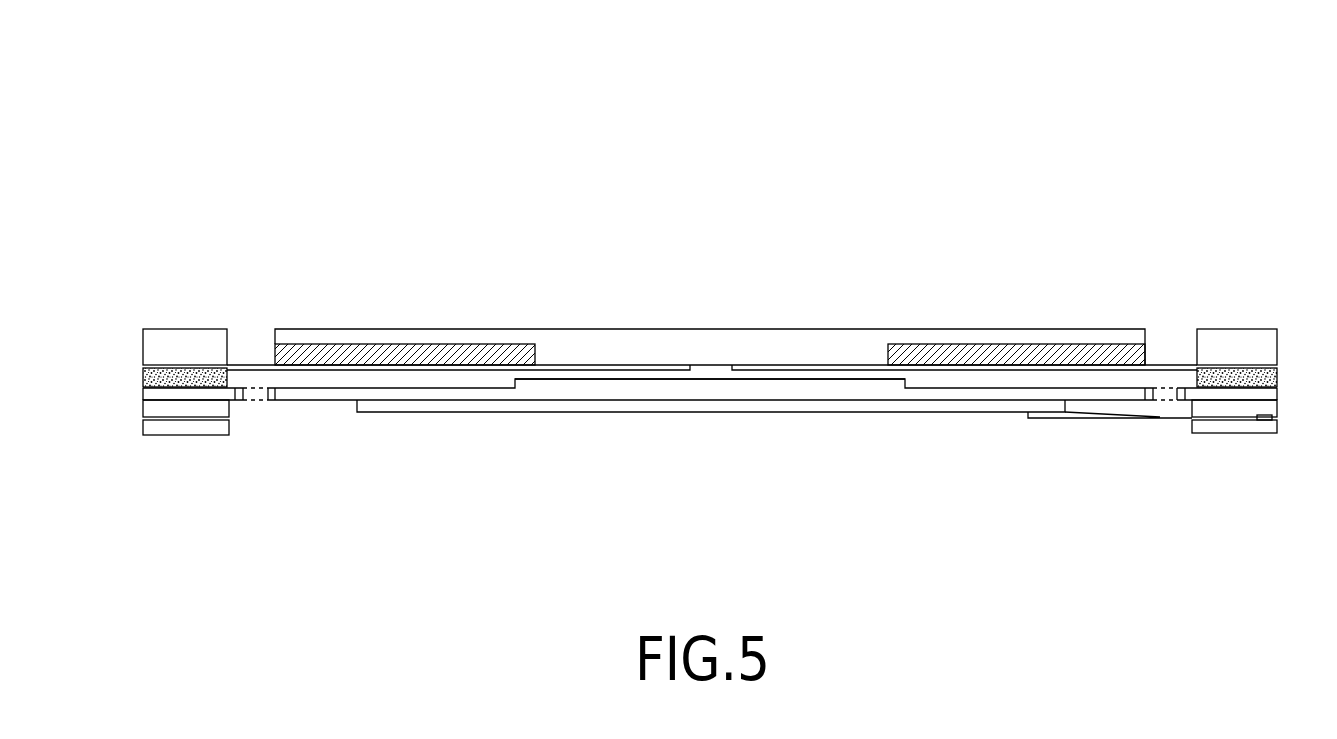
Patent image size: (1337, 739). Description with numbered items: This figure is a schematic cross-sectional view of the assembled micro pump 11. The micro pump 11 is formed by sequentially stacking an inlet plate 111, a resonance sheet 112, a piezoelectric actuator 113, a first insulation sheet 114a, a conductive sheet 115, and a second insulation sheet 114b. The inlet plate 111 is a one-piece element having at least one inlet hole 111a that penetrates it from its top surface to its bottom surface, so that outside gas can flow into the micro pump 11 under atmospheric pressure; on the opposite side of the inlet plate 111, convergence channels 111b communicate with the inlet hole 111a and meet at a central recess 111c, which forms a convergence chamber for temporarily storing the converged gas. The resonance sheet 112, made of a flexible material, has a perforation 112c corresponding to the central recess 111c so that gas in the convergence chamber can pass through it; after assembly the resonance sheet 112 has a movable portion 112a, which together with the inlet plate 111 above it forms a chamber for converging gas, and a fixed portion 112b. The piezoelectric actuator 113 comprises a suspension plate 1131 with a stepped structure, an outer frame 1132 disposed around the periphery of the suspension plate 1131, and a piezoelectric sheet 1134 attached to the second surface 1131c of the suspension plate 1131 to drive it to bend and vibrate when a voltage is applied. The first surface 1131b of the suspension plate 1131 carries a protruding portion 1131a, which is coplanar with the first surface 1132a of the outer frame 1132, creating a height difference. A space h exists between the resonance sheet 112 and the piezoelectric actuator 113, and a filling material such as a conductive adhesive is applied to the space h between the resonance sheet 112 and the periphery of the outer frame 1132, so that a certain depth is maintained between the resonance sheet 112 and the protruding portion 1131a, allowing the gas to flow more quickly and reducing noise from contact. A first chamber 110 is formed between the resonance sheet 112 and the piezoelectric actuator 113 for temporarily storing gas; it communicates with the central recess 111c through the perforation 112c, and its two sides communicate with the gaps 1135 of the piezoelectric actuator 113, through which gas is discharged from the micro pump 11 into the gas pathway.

The micro pump 11 is at (1240, 200).
The first chamber 110 is at (418, 378).
The inlet plate 111 is at (1233, 345).
The inlet hole 111a is at (258, 313).
The convergence channel 111b is at (401, 350).
The central recess 111c is at (628, 357).
The resonance sheet 112 is at (922, 265).
The movable portion 112a is at (783, 364).
The fixed portion 112b is at (917, 360).
The perforation 112c is at (713, 351).
The piezoelectric actuator 113 is at (1260, 395).
The suspension plate 1131 is at (982, 393).
The protruding portion 1131a is at (570, 376).
The first surface 1131b is at (1028, 389).
The second surface 1131c is at (327, 402).
The outer frame 1132 is at (207, 390).
The first surface 1132a is at (165, 389).
The piezoelectric sheet 1134 is at (728, 414).
The gap 1135 is at (263, 390).
The first insulation sheet 114a is at (1252, 404).
The second insulation sheet 114b is at (1212, 427).
The conductive sheet 115 is at (1275, 420).
The space h is at (143, 387).